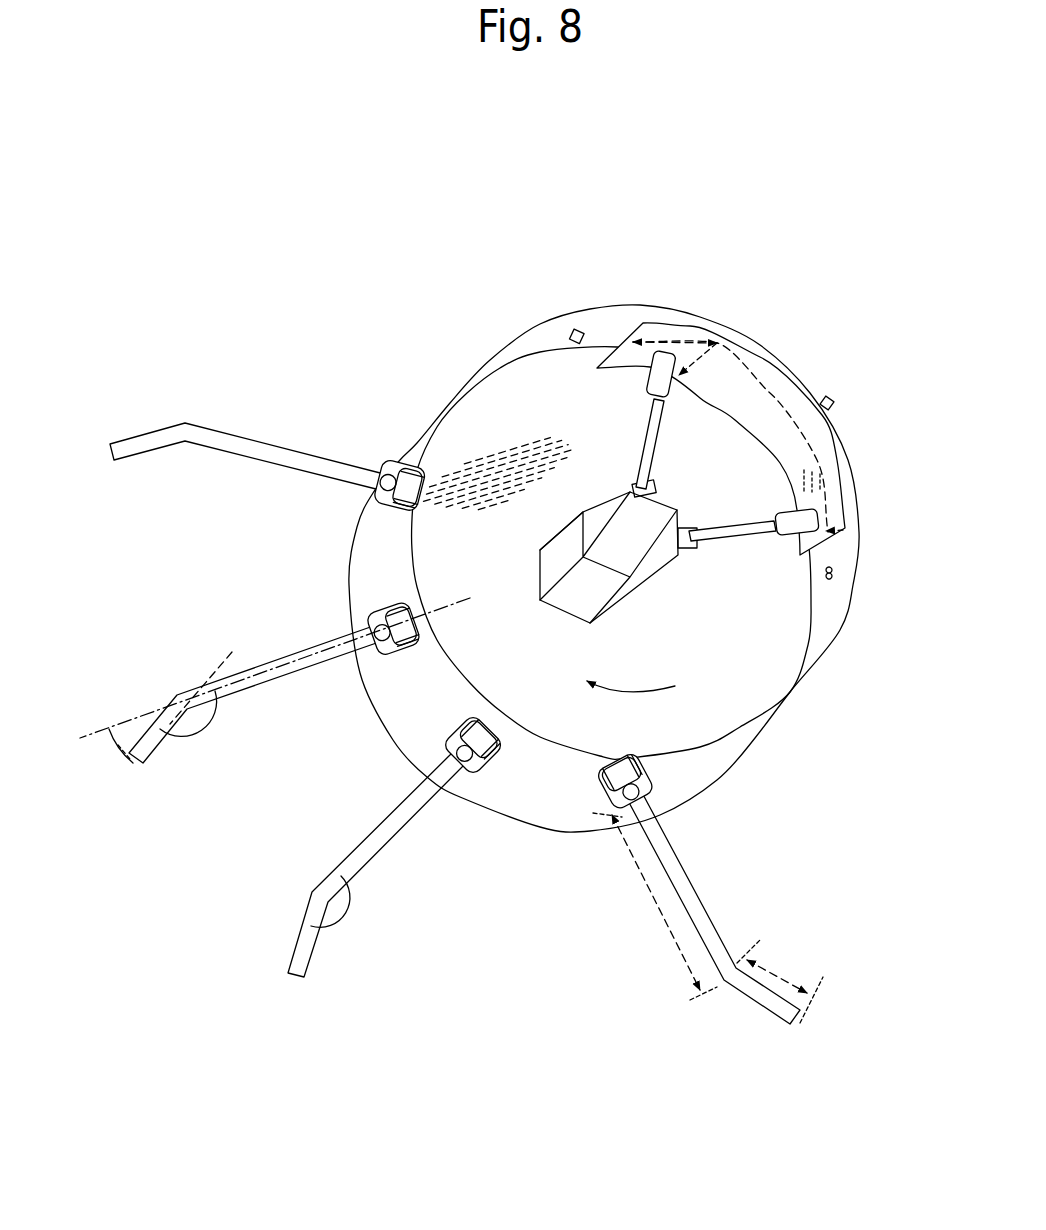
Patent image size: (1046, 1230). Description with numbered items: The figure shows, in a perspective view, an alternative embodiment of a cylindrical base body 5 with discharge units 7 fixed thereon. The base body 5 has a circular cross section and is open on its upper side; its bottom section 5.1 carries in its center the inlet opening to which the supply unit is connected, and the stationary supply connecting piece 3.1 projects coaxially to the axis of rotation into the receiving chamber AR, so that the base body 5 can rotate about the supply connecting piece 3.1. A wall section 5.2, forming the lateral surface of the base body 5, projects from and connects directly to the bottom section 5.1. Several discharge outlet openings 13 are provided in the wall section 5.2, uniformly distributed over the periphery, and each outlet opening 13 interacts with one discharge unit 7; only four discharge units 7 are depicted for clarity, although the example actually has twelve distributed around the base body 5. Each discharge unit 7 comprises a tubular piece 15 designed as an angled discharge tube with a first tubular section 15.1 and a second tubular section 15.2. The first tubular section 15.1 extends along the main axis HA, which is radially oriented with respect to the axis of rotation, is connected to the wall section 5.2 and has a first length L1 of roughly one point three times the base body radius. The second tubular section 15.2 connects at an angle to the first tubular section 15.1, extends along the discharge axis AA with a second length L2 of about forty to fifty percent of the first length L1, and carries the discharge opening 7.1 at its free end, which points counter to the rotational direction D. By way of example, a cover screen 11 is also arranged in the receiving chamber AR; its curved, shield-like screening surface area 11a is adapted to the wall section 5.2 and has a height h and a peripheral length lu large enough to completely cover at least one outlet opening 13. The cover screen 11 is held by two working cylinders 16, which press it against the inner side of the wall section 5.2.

The base body 5 is at (604, 557).
The bottom section 5.1 is at (549, 677).
The wall section 5.2 is at (435, 707).
The discharge outlet opening 13 is at (575, 330).
The cover screen 11 is at (764, 427).
The screening surface area 11a is at (827, 436).
The supply connecting piece 3.1 is at (600, 503).
The working cylinder 16 is at (663, 428).
The discharge unit 7 is at (456, 731).
The discharge opening 7.1 is at (137, 768).
The tubular piece 15 is at (268, 446).
The first tubular section 15.1 is at (300, 486).
The second tubular section 15.2 is at (133, 462).
The main axis HA is at (275, 658).
The discharge axis AA is at (201, 680).
The receiving chamber AR is at (643, 731).
The rotational direction D is at (631, 680).
The first length L1 is at (655, 906).
The second length L2 is at (780, 981).
The height h is at (697, 378).
The peripheral length lu is at (823, 500).